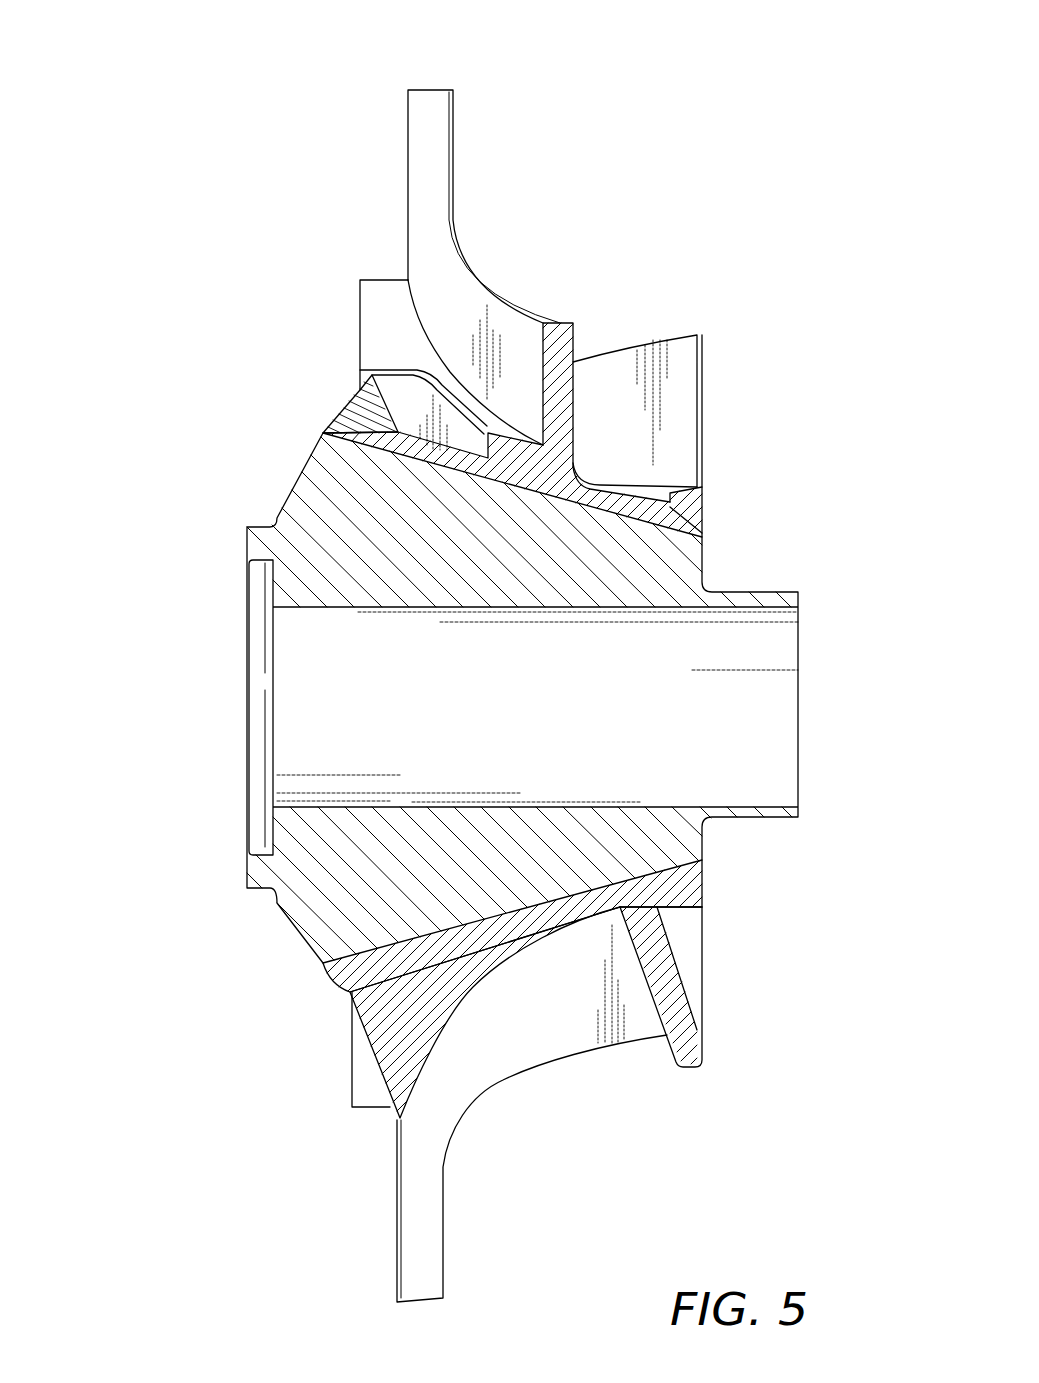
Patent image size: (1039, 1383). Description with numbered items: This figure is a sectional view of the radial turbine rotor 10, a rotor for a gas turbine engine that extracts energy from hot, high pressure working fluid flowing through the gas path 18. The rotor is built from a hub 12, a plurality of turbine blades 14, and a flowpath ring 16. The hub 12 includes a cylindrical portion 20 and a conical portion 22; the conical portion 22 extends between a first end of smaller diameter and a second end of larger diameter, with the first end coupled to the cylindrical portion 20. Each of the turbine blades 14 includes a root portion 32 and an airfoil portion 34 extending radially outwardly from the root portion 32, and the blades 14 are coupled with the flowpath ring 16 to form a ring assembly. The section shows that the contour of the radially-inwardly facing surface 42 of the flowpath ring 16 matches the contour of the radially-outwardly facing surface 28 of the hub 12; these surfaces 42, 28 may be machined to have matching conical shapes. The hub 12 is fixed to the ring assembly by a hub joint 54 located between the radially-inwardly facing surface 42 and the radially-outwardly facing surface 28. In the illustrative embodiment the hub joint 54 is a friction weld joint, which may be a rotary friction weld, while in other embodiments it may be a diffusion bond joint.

The radial turbine rotor 10 is at (141, 95).
The hub 12 is at (830, 1000).
The turbine blades 14 is at (294, 165).
The flowpath ring 16 is at (335, 386).
The gas path 18 is at (585, 212).
The cylindrical portion 20 is at (784, 830).
The conical portion 22 is at (715, 845).
The radially-outwardly facing surface 28 is at (325, 430).
The root portion 32 is at (485, 424).
The airfoil portion 34 is at (393, 190).
The radially-inwardly facing surface 42 is at (692, 545).
The hub joint 54 is at (343, 974).